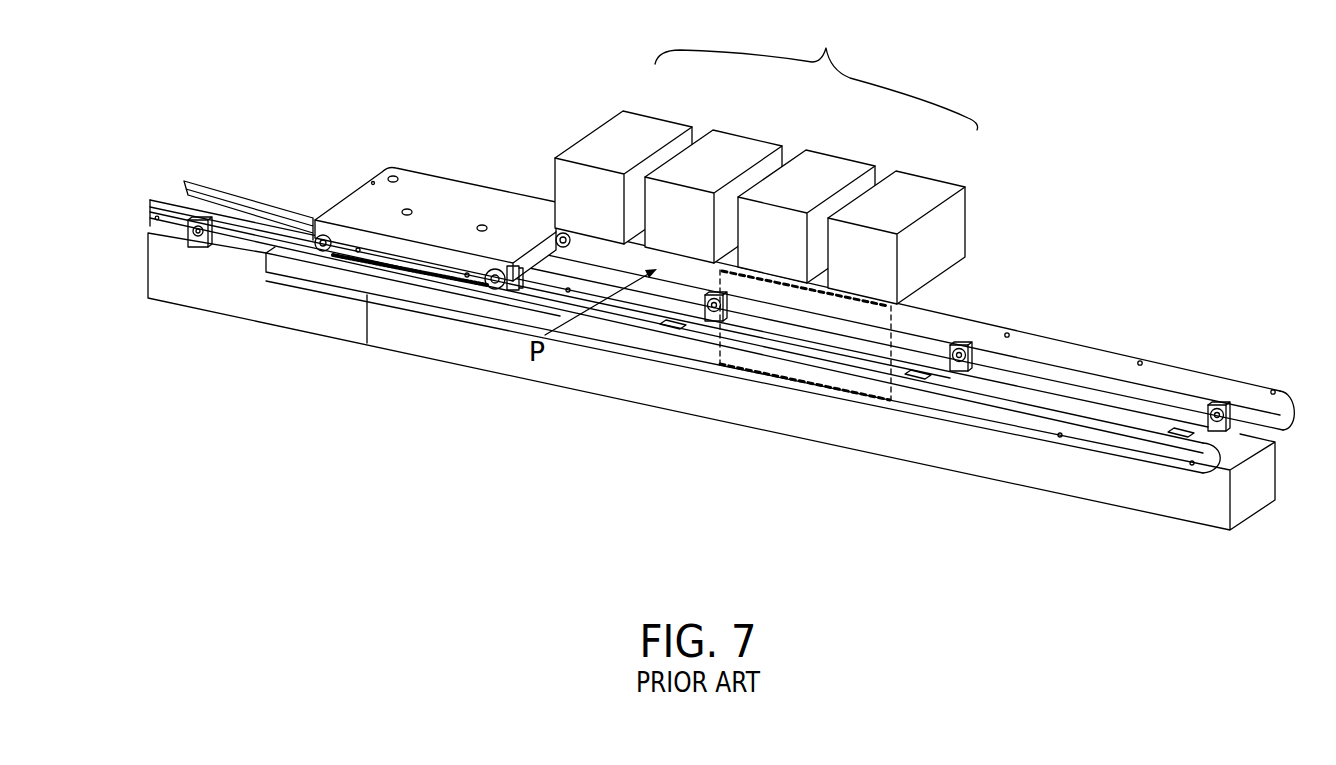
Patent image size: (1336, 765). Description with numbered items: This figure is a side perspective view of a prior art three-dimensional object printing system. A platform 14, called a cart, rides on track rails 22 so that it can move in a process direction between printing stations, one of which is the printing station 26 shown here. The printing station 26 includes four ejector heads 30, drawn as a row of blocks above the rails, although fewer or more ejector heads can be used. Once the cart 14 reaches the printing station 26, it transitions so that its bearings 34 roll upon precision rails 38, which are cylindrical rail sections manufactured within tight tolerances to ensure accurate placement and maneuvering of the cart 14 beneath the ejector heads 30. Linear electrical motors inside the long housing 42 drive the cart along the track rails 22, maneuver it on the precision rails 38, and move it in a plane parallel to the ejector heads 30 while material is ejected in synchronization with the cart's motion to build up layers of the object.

The platform 14 is at (463, 182).
The track rails 22 is at (178, 200).
The printing station 26 is at (816, 78).
The ejector heads 30 is at (722, 130).
The bearings 34 is at (320, 234).
The precision rails 38 is at (1063, 348).
The housing 42 is at (990, 463).